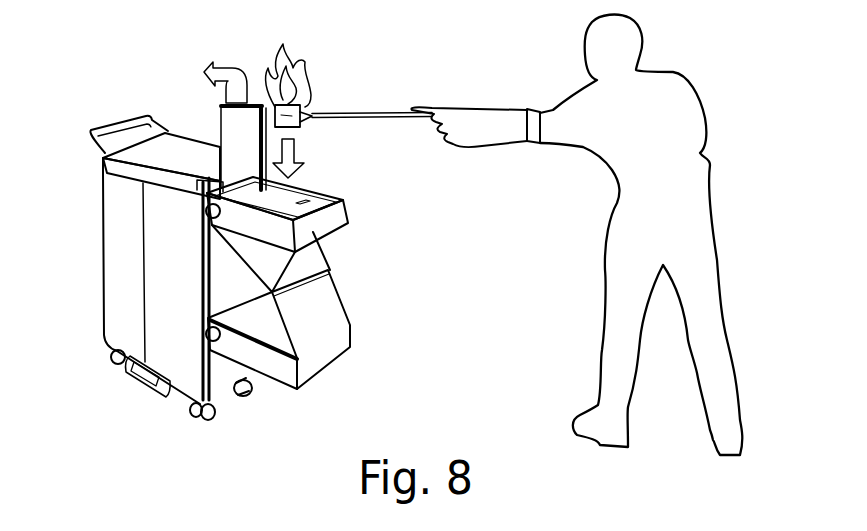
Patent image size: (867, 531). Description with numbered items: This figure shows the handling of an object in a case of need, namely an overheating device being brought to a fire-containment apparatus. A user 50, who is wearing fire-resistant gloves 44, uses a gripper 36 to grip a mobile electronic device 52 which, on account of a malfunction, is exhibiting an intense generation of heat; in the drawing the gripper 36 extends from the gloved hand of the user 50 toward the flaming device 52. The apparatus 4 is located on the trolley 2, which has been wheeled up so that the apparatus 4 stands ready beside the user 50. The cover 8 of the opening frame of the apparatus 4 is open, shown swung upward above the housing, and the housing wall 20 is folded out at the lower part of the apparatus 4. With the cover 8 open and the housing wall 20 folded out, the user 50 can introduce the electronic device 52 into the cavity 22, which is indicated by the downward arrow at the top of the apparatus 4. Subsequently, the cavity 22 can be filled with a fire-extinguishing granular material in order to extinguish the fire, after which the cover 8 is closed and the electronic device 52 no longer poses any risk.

The trolley 2 is at (132, 303).
The apparatus 4 is at (350, 279).
The cover 8 is at (235, 130).
The housing wall 20 is at (318, 317).
The cavity 22 is at (272, 188).
The gripper 36 is at (358, 113).
The fire-resistant gloves 44 is at (473, 118).
The user 50 is at (682, 217).
The mobile electronic device 52 is at (307, 118).